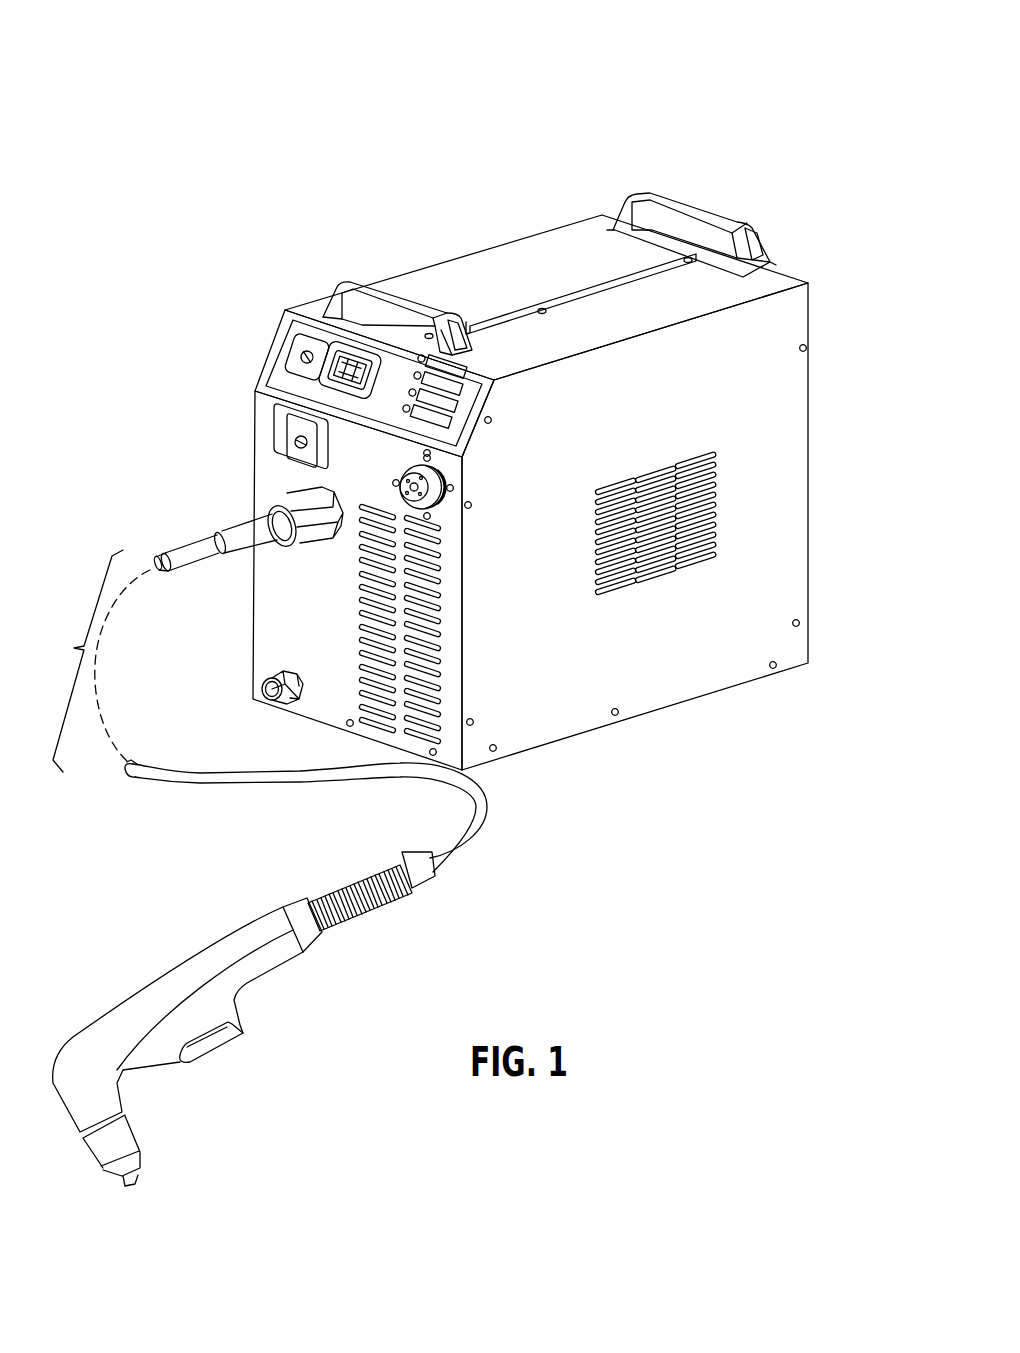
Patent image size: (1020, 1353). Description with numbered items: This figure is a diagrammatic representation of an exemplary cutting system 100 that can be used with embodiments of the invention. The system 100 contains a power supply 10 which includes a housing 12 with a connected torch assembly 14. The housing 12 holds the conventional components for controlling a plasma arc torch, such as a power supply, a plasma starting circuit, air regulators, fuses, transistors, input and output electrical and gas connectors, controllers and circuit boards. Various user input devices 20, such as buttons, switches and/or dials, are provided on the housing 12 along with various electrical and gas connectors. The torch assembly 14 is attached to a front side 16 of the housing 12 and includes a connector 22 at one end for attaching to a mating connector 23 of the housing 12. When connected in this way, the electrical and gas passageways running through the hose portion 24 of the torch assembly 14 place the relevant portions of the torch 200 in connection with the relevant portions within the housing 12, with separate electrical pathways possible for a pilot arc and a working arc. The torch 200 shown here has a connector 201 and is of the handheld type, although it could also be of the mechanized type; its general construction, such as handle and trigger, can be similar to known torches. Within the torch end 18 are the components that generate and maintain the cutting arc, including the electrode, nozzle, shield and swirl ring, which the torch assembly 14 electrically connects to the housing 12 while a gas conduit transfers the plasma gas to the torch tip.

The cutting system 100 is at (429, 648).
The power supply 10 is at (480, 462).
The housing 12 is at (542, 255).
The torch assembly 14 is at (100, 661).
The front side 16 is at (455, 553).
The torch end 18 is at (115, 1210).
The user input devices 20 is at (238, 356).
The connector 22 is at (325, 535).
The mating connector 23 is at (444, 477).
The hose portion 24 is at (282, 780).
The torch 200 is at (244, 1066).
The connector 201 is at (313, 940).